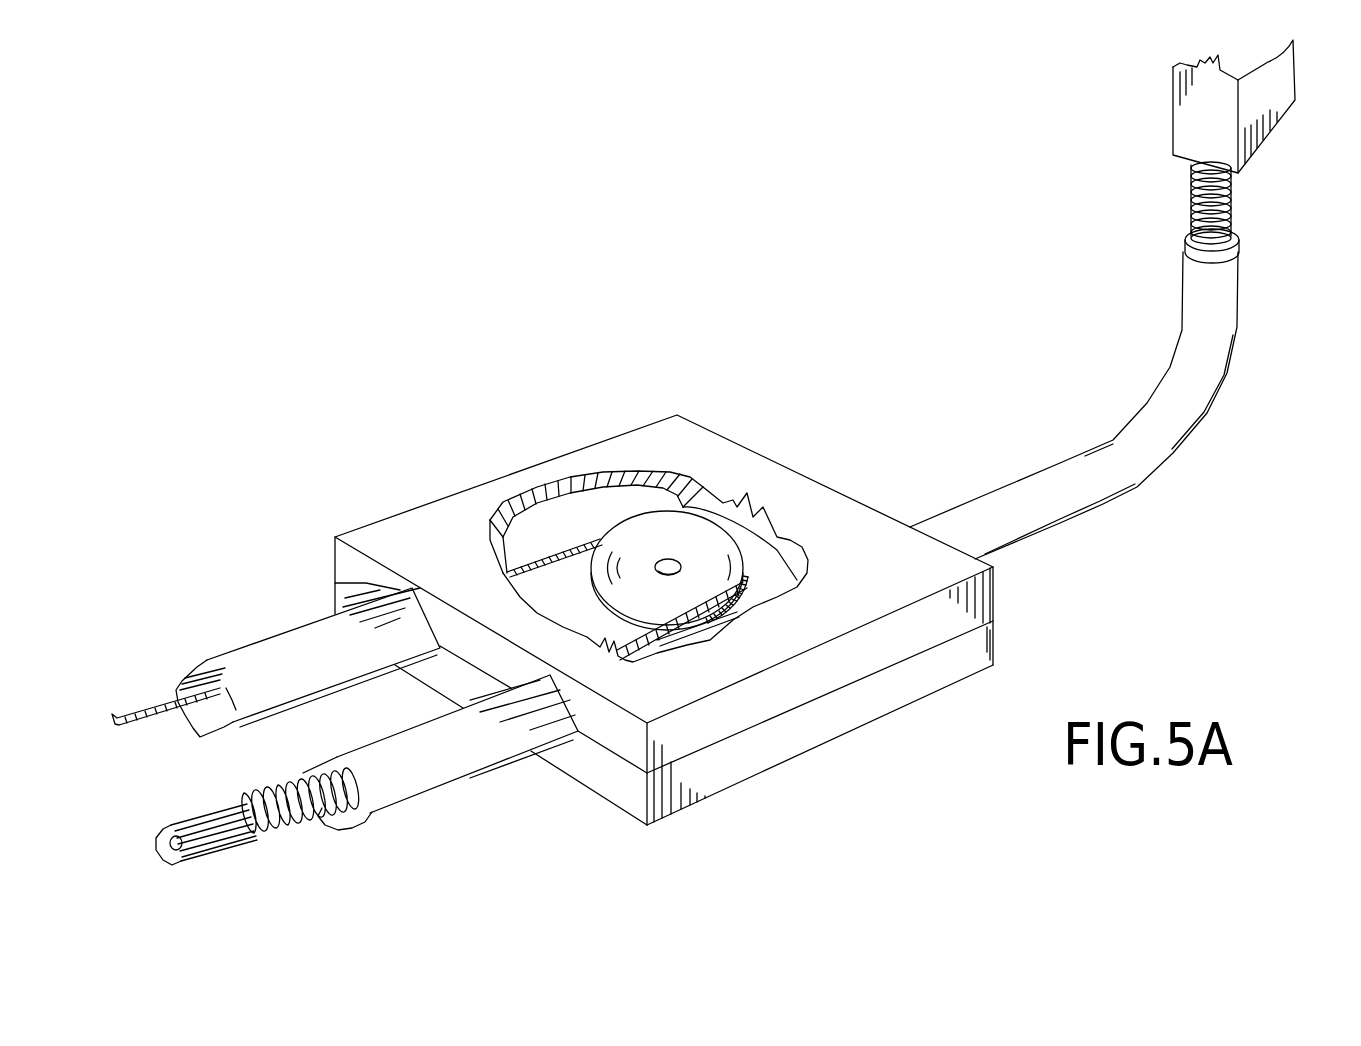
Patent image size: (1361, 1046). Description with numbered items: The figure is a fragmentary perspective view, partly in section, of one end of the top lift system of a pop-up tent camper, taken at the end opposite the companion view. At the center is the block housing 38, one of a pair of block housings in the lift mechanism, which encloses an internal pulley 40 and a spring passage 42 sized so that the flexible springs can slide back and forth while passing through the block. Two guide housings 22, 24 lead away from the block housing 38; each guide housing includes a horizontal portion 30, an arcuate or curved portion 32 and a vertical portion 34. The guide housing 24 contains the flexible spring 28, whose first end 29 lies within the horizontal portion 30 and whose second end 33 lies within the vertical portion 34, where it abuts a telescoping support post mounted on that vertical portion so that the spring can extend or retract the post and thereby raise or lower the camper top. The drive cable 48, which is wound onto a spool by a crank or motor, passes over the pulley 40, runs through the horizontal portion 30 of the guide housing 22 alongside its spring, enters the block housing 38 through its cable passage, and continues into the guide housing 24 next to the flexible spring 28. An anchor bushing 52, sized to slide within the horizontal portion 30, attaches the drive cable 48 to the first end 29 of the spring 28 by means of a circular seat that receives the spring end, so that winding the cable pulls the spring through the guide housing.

The guide housing 22 is at (237, 648).
The guide housing 24 is at (415, 797).
The flexible spring 28 is at (720, 640).
The first end 29 is at (270, 840).
The horizontal portion 30 is at (493, 755).
The arcuate or curved portion 32 is at (1227, 368).
The second end 33 is at (1233, 180).
The vertical portion 34 is at (1242, 250).
The block housing 38 is at (960, 683).
The internal pulley 40 is at (680, 513).
The spring passage 42 is at (803, 550).
The drive cable 48 is at (553, 557).
The anchor bushing 52 is at (205, 858).